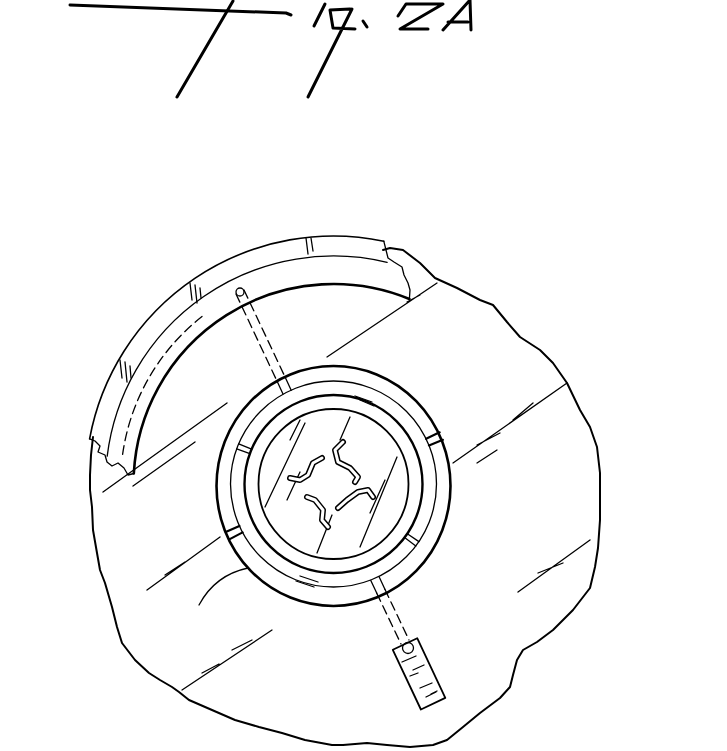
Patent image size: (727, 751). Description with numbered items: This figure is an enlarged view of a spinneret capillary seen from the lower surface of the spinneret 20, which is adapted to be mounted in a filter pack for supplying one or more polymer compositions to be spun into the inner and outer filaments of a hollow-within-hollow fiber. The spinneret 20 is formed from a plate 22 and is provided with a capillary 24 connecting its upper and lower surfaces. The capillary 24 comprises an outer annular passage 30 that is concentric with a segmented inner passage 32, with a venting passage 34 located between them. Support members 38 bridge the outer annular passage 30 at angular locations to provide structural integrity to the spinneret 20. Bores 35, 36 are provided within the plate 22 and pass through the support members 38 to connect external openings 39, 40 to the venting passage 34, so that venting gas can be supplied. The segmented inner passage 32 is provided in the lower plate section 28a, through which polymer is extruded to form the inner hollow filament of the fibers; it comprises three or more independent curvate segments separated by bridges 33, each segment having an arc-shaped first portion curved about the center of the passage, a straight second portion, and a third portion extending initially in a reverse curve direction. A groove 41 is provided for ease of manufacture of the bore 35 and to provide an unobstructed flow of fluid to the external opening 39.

The spinneret 20 is at (298, 446).
The plate 22 is at (360, 238).
The capillary 24 is at (339, 451).
The lower plate section 28a is at (220, 634).
The outer annular passage 30 is at (334, 486).
The segmented inner passage 32 is at (394, 524).
The bridges 33 is at (405, 548).
The venting passage 34 is at (415, 478).
The bore 35 is at (390, 615).
The bore 36 is at (258, 318).
The support members 38 is at (304, 373).
The external opening 39 is at (428, 662).
The external opening 40 is at (237, 290).
The groove 41 is at (405, 665).